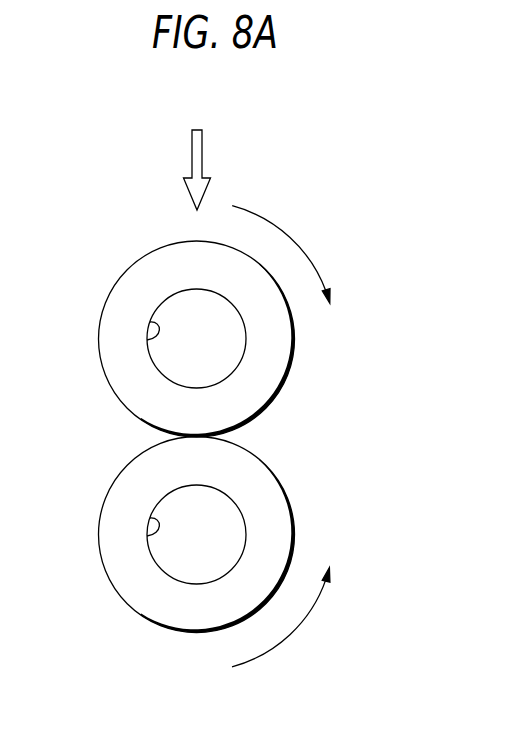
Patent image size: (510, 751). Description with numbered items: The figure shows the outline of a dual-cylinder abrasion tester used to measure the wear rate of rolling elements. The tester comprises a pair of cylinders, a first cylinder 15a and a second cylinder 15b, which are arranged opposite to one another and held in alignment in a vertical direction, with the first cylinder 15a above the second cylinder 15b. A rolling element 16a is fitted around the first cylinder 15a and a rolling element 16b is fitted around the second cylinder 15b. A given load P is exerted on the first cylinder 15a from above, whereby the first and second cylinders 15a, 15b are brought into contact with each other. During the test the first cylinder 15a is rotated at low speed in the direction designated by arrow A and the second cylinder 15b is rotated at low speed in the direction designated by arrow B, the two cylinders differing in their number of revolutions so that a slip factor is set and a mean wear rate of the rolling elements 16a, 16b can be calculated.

The first cylinder 15a is at (147, 340).
The rolling element 16a is at (295, 338).
The second cylinder 15b is at (147, 536).
The rolling element 16b is at (295, 536).
The load P is at (197, 152).
The arrow (rotation direction of first cylinder) A is at (281, 249).
The arrow (rotation direction of second cylinder) B is at (281, 617).